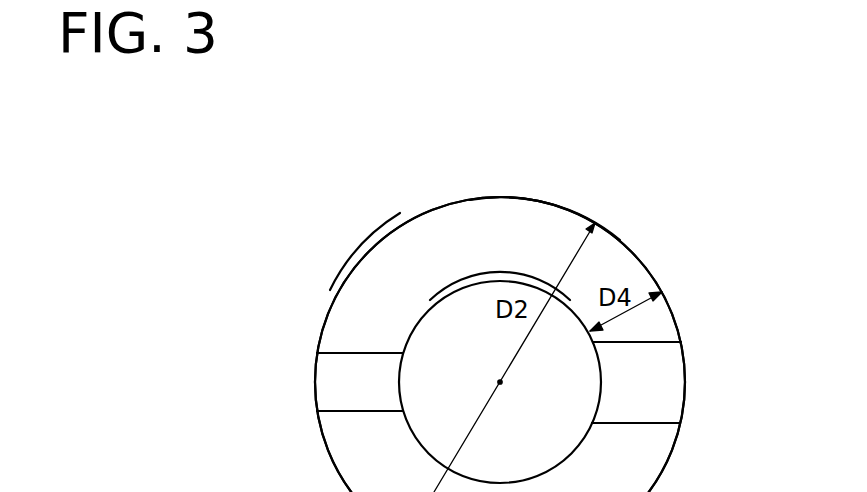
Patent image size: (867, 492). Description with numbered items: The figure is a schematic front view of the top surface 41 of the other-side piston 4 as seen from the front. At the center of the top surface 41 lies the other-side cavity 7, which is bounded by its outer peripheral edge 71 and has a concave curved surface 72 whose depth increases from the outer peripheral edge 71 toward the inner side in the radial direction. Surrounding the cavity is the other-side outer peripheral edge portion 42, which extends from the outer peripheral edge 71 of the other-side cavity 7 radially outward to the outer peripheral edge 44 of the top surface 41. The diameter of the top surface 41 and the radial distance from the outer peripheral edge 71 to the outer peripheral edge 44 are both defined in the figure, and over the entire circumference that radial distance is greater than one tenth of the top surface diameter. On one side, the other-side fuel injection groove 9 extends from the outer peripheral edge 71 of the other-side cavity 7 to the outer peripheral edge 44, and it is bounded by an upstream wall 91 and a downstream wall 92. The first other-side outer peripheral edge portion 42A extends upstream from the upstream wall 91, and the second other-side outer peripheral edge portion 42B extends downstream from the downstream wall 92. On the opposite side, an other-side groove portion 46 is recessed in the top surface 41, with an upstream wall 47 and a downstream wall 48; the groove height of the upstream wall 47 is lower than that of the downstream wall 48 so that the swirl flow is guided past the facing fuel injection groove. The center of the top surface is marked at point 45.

The other-side piston 4 is at (266, 116).
The other-side cavity 7 is at (442, 317).
The other-side fuel injection groove 9 is at (330, 388).
The top surface 41 is at (362, 280).
The other-side outer peripheral edge portion 42 is at (388, 278).
The first other-side outer peripheral edge portion 42A is at (600, 480).
The second other-side outer peripheral edge portion 42B is at (553, 256).
The outer peripheral edge 44 is at (545, 200).
The center point 45 is at (502, 385).
The other-side groove portion 46 is at (672, 387).
The upstream wall 47 is at (657, 342).
The downstream wall 48 is at (656, 423).
The outer peripheral edge 71 is at (483, 280).
The concave curved surface 72 is at (481, 376).
The upstream wall 91 is at (347, 412).
The downstream wall 92 is at (348, 352).